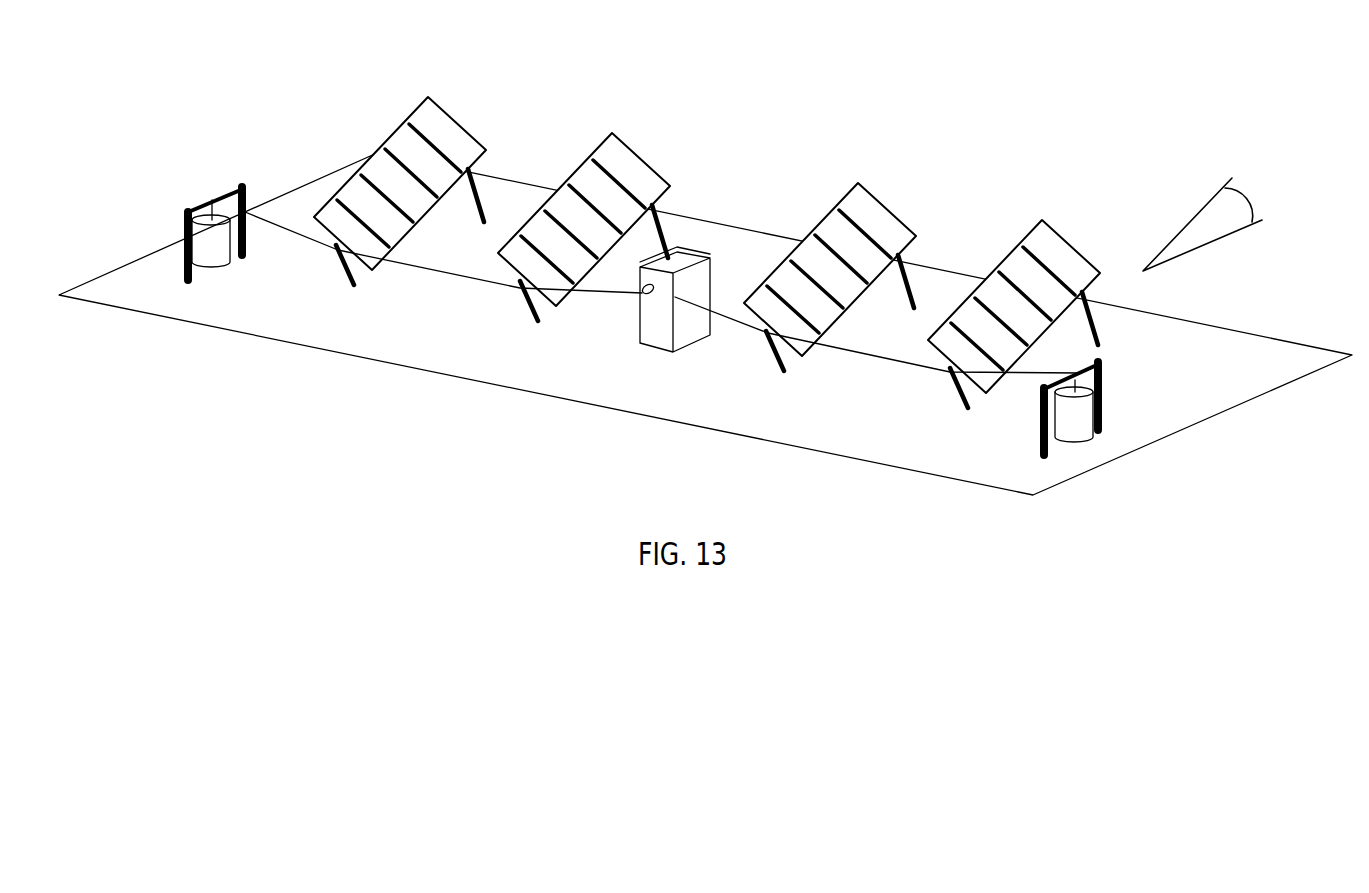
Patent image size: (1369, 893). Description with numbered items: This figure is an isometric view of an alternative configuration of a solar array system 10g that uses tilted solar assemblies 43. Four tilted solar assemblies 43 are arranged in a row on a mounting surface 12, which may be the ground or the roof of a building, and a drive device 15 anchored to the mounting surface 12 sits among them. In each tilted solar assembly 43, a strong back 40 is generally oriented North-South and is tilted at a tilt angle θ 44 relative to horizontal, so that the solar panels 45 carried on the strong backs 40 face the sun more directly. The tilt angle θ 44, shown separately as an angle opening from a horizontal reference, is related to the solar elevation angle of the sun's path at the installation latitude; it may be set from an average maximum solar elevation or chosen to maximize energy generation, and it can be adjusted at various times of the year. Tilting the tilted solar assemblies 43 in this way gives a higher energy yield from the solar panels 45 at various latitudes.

The solar array system 10g is at (914, 96).
The mounting surface 12 is at (293, 333).
The drive device 15 is at (708, 270).
The strong back 40 is at (888, 212).
The tilted solar assembly 43 is at (352, 144).
The tilt angle θ 44 is at (1238, 184).
The solar panel 45 is at (432, 124).